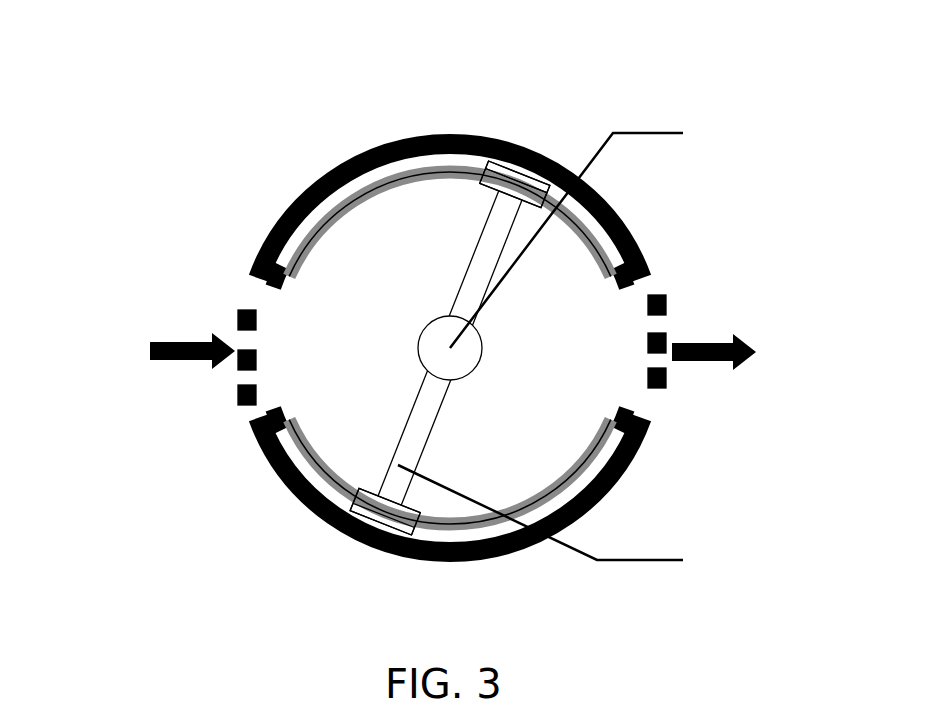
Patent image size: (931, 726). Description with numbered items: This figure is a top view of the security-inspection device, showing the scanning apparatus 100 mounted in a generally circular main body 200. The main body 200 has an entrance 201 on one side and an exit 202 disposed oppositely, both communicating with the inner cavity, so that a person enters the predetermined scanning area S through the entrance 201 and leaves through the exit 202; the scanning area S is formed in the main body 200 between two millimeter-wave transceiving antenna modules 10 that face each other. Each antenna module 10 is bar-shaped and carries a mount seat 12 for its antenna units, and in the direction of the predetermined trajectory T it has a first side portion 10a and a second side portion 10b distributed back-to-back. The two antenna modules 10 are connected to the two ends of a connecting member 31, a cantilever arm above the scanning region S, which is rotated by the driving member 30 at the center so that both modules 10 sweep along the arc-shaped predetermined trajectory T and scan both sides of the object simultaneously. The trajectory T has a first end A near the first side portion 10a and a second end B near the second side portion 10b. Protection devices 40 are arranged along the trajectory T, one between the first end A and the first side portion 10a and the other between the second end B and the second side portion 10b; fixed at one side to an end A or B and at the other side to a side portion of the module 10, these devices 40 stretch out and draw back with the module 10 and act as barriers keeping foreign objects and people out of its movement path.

The main body 200 is at (393, 307).
The protection device 40 is at (439, 325).
The entrance 201 is at (236, 300).
The exit 202 is at (679, 386).
The driving member 30 is at (574, 248).
The connecting member 31 is at (567, 525).
The millimeter-wave transceiving antenna module 10 is at (489, 206).
The first side portion 10a is at (455, 103).
The second side portion 10b is at (617, 135).
The mount seat 12 is at (440, 295).
The scanning apparatus 100 is at (339, 508).
The first end A is at (289, 290).
The second end B is at (603, 289).
The predetermined trajectory T is at (360, 213).
The predetermined scanning area S is at (518, 397).